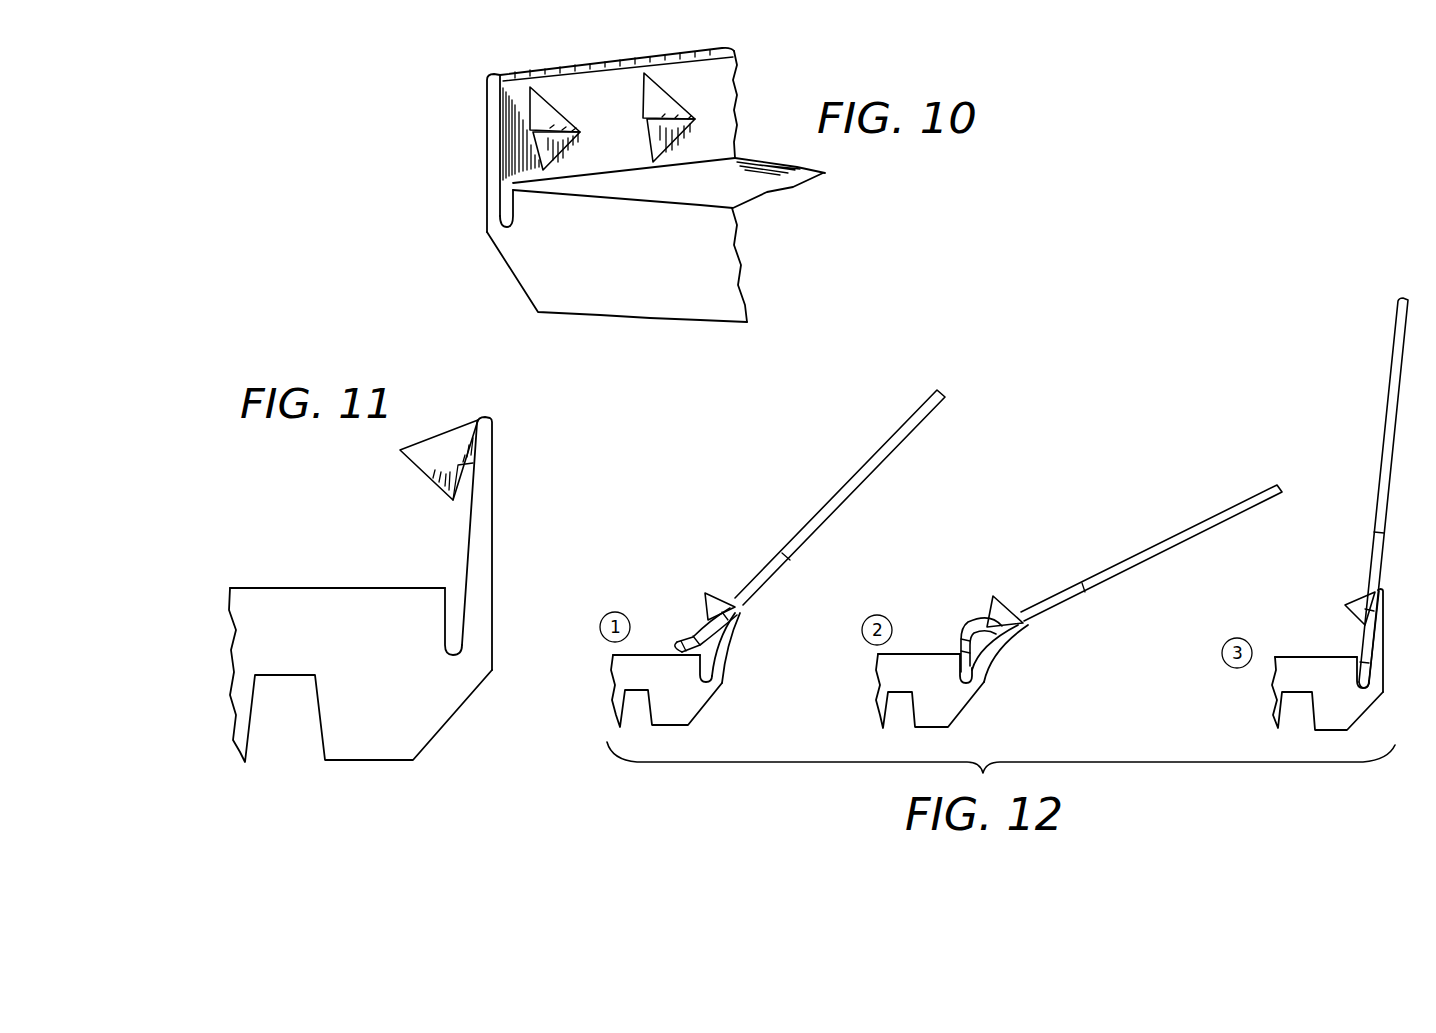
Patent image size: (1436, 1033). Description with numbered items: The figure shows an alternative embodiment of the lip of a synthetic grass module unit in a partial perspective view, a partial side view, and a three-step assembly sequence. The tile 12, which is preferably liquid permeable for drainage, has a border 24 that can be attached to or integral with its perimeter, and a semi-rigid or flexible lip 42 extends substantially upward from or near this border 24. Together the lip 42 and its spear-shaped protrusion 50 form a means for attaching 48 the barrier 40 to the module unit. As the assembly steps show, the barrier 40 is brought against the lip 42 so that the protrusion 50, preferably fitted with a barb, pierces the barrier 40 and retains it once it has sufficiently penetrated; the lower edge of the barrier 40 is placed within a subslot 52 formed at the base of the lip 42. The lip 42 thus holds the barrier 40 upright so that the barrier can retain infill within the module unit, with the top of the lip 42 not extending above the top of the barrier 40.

In FIG. 10, the tile 12 is at (656, 240).
In FIG. 11, the tile 12 is at (360, 675).
In FIG. 12, the tile 12 is at (997, 692).
In FIG. 10, the border 24 is at (653, 269).
In FIG. 11, the border 24 is at (408, 681).
In FIG. 12, the border 24 is at (683, 679).
In FIG. 12, the barrier 40 is at (933, 413).
In FIG. 10, the lip 42 is at (497, 128).
In FIG. 11, the lip 42 is at (495, 527).
In FIG. 12, the lip 42 is at (1047, 640).
In FIG. 10, the means for attaching 48 is at (535, 58).
In FIG. 11, the means for attaching 48 is at (428, 556).
In FIG. 10, the protrusion 50 is at (565, 113).
In FIG. 11, the protrusion 50 is at (427, 437).
In FIG. 12, the protrusion 50 is at (723, 593).
In FIG. 10, the subslot 52 is at (502, 218).
In FIG. 11, the subslot 52 is at (455, 640).
In FIG. 12, the subslot 52 is at (703, 670).